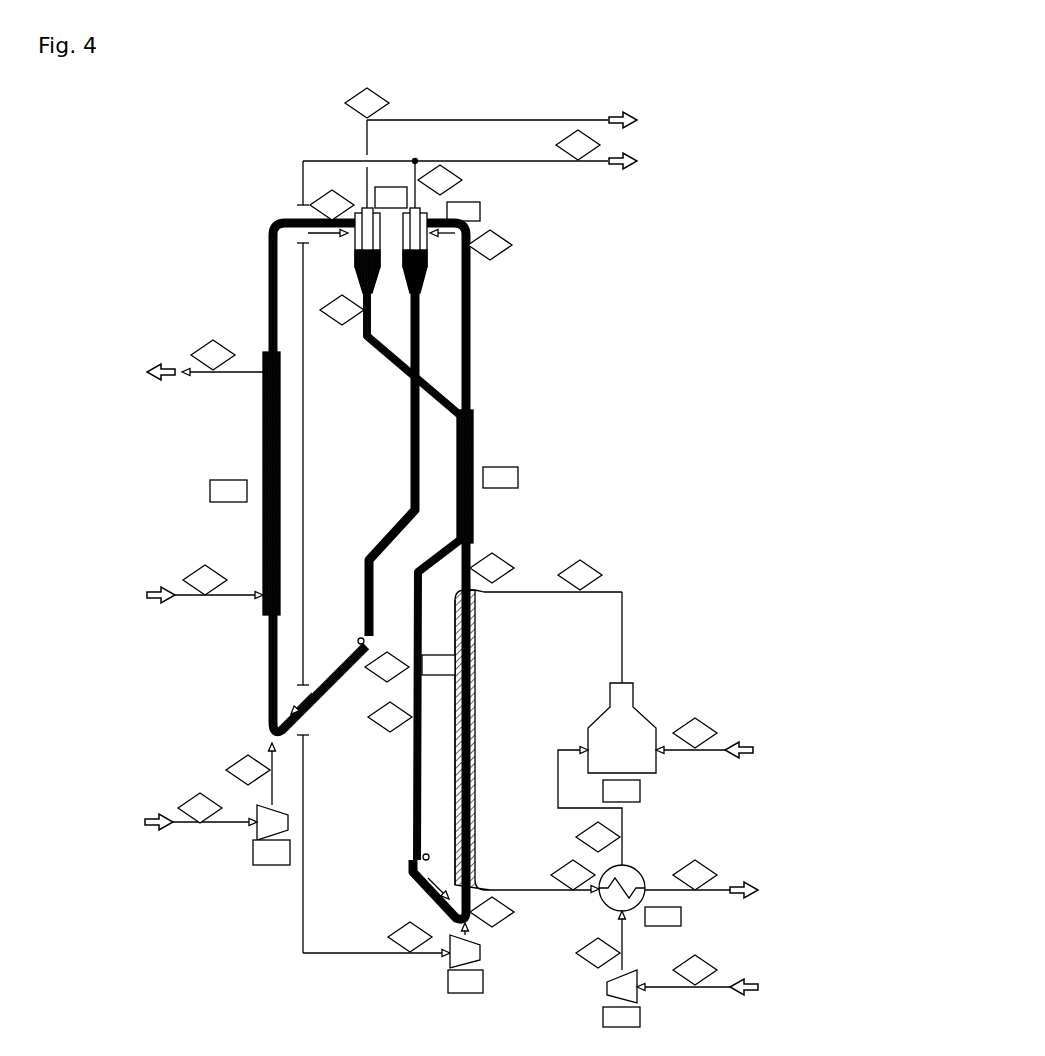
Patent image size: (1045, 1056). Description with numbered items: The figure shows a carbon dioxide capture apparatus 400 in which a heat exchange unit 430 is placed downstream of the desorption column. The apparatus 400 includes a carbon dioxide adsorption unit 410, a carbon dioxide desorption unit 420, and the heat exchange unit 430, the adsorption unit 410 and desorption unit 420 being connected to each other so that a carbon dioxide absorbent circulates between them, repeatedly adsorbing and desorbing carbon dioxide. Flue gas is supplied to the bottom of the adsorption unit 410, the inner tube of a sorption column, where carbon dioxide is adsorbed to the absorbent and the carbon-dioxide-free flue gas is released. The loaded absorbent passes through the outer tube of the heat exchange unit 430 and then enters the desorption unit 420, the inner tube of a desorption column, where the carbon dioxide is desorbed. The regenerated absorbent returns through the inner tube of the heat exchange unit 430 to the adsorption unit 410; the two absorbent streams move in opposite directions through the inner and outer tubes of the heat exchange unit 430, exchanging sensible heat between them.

The carbon dioxide capture apparatus 400 is at (280, 140).
The carbon dioxide adsorption unit 410 is at (260, 419).
The carbon dioxide desorption unit 420 is at (482, 695).
The heat exchange unit 430 is at (478, 439).